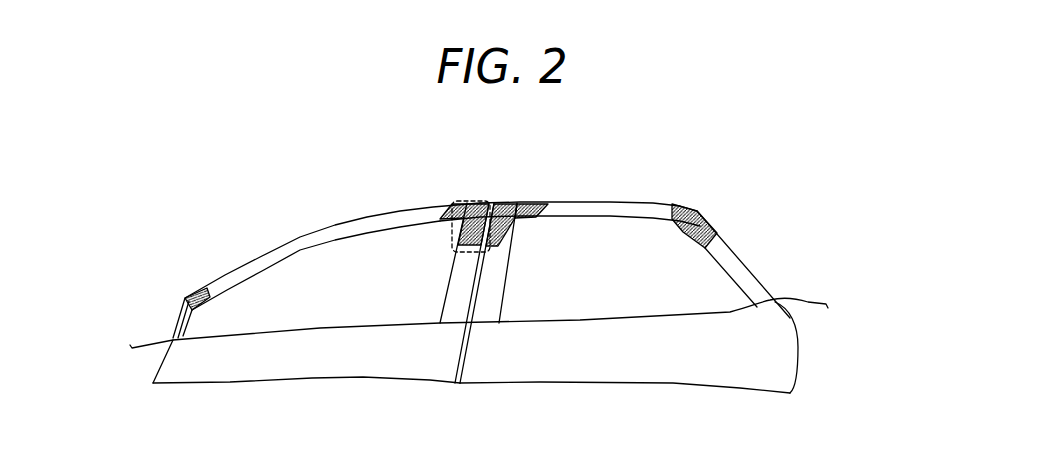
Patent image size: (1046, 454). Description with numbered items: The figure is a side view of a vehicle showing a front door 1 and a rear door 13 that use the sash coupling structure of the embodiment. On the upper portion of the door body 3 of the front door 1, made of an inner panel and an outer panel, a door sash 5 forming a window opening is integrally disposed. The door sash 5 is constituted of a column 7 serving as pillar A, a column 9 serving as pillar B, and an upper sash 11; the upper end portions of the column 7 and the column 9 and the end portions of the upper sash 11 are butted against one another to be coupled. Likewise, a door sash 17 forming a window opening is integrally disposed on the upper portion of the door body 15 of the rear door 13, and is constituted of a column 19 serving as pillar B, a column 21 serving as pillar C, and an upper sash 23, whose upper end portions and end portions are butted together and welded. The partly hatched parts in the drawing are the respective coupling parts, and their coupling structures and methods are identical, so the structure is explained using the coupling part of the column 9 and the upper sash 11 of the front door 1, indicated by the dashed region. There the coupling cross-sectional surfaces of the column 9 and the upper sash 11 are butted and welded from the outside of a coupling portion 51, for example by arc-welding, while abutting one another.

The front door 1 is at (228, 250).
The door body 3 is at (312, 360).
The door body 15 is at (557, 360).
The door sash 5 is at (277, 177).
The column (pillar A) 7 is at (226, 289).
The upper sash 11 is at (318, 230).
The column (pillar B) 9 is at (447, 270).
The coupling portion 51 is at (471, 200).
The door sash 17 is at (648, 147).
The column (pillar B) 19 is at (503, 274).
The upper sash 23 is at (592, 207).
The column (pillar C) 21 is at (687, 225).
The rear door 13 is at (691, 193).